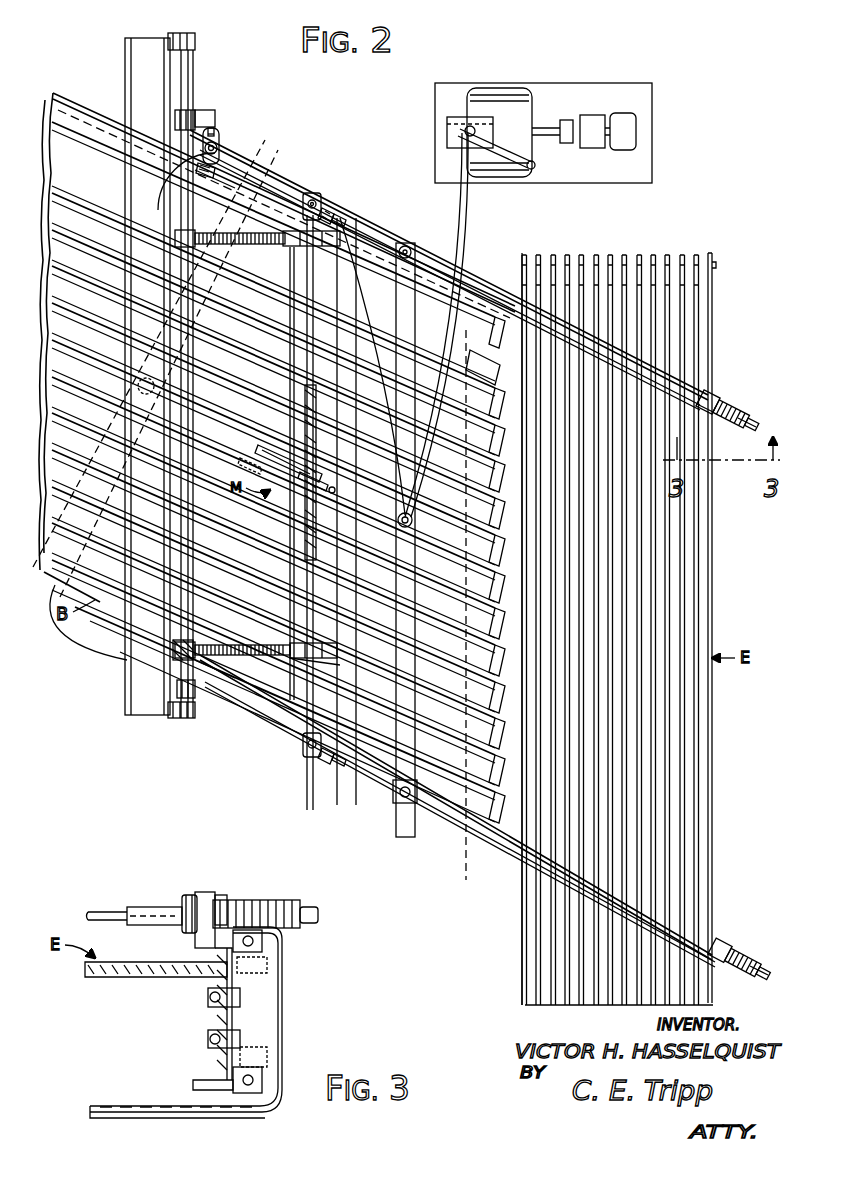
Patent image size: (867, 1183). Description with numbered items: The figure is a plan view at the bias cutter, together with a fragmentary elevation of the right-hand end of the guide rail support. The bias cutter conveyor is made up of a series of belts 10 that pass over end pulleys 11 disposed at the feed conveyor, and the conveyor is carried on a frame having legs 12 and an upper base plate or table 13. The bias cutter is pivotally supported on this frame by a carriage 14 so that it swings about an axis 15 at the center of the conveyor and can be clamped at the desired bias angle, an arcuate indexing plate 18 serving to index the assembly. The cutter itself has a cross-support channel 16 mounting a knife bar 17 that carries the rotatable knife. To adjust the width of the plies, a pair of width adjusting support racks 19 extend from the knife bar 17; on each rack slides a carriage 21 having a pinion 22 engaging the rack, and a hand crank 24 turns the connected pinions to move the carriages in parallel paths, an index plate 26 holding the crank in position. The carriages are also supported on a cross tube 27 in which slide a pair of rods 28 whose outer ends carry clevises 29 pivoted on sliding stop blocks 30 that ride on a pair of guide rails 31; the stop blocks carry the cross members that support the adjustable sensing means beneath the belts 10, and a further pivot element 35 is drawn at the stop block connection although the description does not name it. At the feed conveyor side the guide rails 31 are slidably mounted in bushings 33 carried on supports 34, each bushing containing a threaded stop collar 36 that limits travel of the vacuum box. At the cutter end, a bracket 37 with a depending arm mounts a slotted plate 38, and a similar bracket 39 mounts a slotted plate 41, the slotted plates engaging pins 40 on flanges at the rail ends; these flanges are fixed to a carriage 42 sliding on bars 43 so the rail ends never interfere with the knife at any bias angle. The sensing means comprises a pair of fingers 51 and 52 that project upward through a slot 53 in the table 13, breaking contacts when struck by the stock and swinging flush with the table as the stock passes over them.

In FIG. 2, the belts 10 is at (88, 184).
In FIG. 2, the end pulleys 11 is at (492, 372).
In FIG. 2, the legs 12 is at (490, 845).
In FIG. 2, the upper base plate or table 13 is at (455, 258).
In FIG. 2, the carriage 14 is at (82, 550).
In FIG. 2, the axis 15 is at (138, 384).
In FIG. 2, the cross-support channel 16 is at (133, 56).
In FIG. 2, the knife bar 17 is at (186, 392).
In FIG. 2, the arcuate indexing plate 18 is at (128, 120).
In FIG. 2, the width adjusting support racks 19 is at (225, 248).
In FIG. 2, the carriage 21 is at (343, 290).
In FIG. 2, the pinion 22 is at (290, 246).
In FIG. 2, the hand crank 24 is at (250, 232).
In FIG. 2, the index plate 26 is at (338, 662).
In FIG. 2, the cross tube 27 is at (306, 355).
In FIG. 2, the rods 28 is at (305, 390).
In FIG. 2, the clevises 29 is at (345, 216).
In FIG. 2, the sliding stop blocks 30 is at (313, 190).
In FIG. 2, the guide rails 31 is at (500, 860).
In FIG. 3, the guide rails 31 is at (142, 908).
In FIG. 2, the bushings 33 is at (740, 425).
In FIG. 3, the bushings 33 is at (280, 900).
In FIG. 2, the supports 34 is at (718, 400).
In FIG. 3, the supports 34 is at (218, 892).
In FIG. 2, the pin 35 is at (332, 212).
In FIG. 2, the threaded stop collar 36 is at (704, 392).
In FIG. 3, the threaded stop collar 36 is at (184, 900).
In FIG. 2, the bracket 37 is at (177, 692).
In FIG. 2, the slotted plate 38 is at (196, 716).
In FIG. 2, the bracket 39 is at (176, 110).
In FIG. 2, the pins 40 is at (214, 140).
In FIG. 2, the slotted plate 41 is at (213, 130).
In FIG. 2, the carriage 42 is at (200, 180).
In FIG. 2, the bars 43 is at (196, 172).
In FIG. 2, the finger 51 is at (305, 428).
In FIG. 2, the finger 52 is at (335, 488).
In FIG. 2, the slot 53 is at (255, 453).